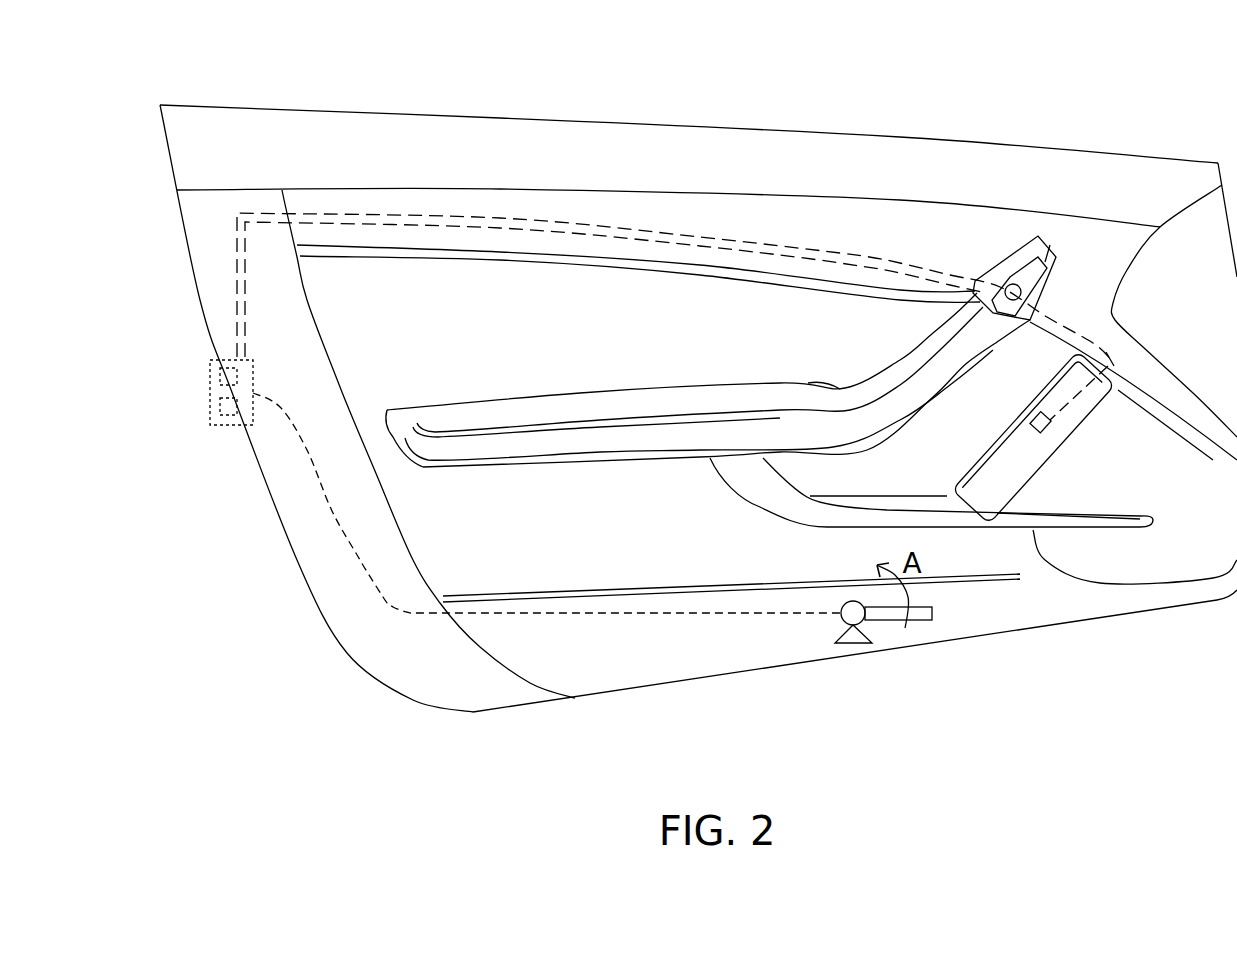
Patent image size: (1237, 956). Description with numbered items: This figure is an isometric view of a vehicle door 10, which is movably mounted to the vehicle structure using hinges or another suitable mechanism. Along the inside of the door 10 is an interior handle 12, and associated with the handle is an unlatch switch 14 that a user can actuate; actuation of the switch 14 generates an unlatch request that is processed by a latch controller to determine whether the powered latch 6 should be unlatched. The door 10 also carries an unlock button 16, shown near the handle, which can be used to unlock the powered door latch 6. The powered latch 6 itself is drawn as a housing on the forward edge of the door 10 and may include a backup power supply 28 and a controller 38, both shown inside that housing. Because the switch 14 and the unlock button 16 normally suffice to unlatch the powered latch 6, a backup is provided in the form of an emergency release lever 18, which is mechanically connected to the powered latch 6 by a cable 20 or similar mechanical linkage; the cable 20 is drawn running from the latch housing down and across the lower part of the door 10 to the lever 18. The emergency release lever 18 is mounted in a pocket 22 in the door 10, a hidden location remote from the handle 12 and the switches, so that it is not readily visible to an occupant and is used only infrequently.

The powered latch 6 is at (230, 427).
The vehicle door 10 is at (505, 147).
The interior handle 12 is at (938, 383).
The unlatch switch 14 is at (1010, 283).
The unlock button 16 is at (1048, 432).
The emergency release lever 18 is at (933, 620).
The cable 20 is at (343, 533).
The pocket 22 is at (730, 592).
The backup power supply 28 is at (220, 405).
The controller 38 is at (208, 377).